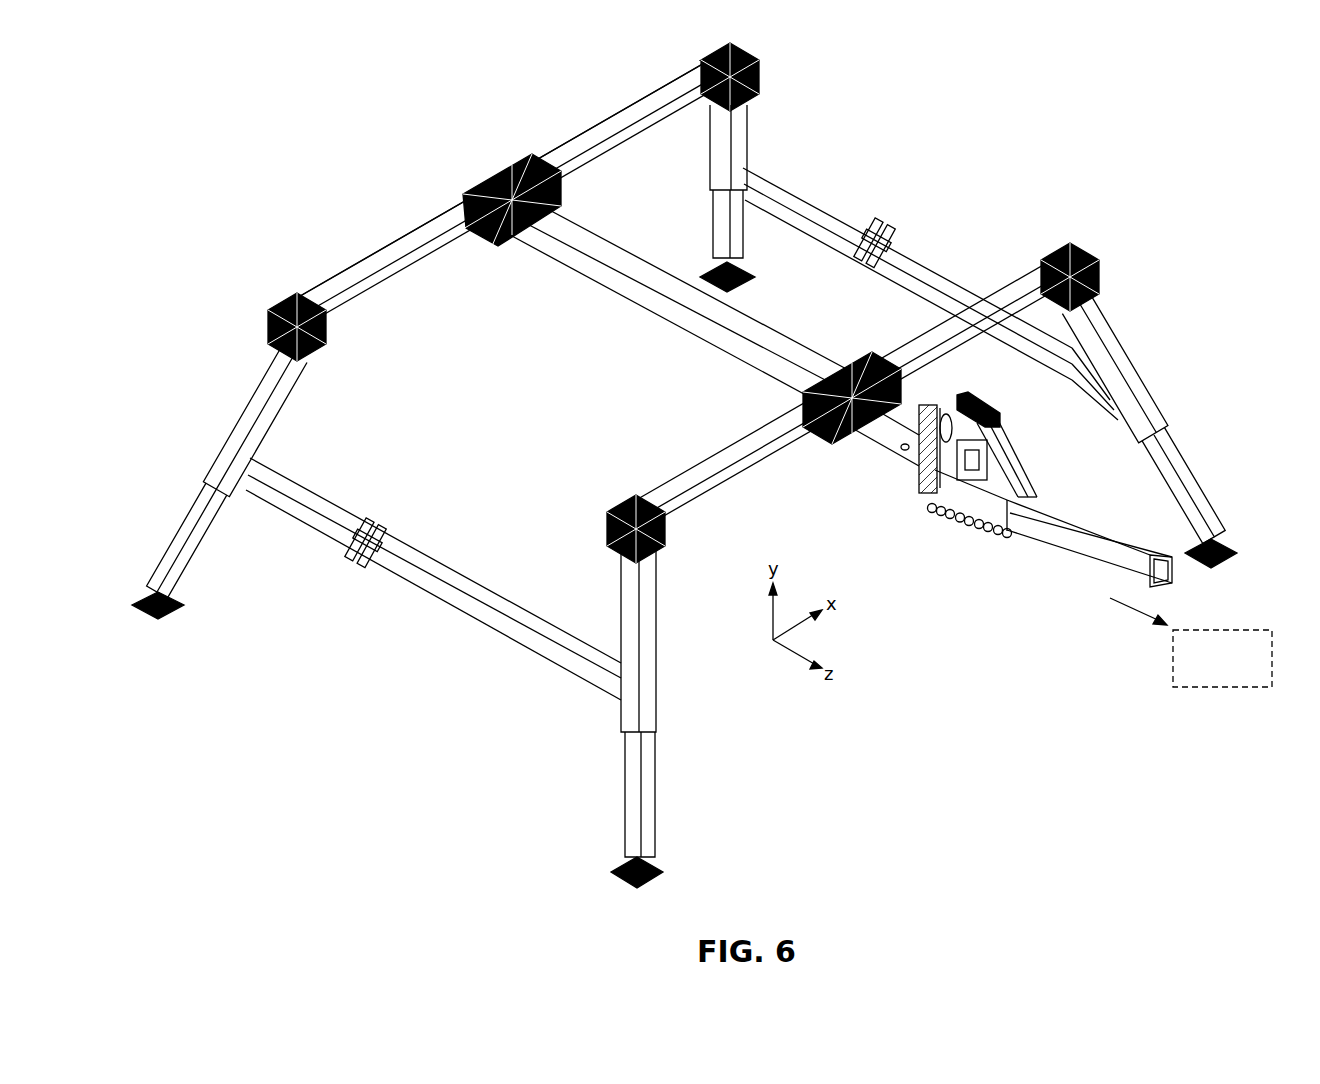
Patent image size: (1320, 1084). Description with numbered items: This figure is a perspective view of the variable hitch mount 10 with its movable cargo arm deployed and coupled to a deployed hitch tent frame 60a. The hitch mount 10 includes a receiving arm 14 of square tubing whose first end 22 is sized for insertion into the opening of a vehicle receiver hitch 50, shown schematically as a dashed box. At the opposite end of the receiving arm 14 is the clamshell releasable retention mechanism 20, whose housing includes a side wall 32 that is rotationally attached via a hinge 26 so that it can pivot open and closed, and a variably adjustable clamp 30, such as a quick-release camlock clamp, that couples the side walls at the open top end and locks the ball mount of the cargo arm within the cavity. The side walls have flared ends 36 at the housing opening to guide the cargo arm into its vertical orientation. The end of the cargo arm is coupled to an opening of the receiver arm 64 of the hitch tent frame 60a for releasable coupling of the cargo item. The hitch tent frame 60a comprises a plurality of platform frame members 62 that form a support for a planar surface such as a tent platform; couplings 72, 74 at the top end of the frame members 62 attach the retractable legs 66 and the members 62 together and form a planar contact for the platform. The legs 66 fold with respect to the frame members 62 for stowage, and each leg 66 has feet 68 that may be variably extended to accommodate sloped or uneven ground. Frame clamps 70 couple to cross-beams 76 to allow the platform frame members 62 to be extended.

The variable hitch mount 10 is at (942, 661).
The receiving arm 14 is at (1090, 563).
The releasable retention mechanism 20 is at (884, 533).
The first end 22 is at (1170, 550).
The hinge 26 is at (1007, 530).
The variably adjustable clamp 30 is at (993, 395).
The side wall 32 is at (977, 508).
The flared ends 36 is at (925, 458).
The vehicle receiver hitch 50 is at (1173, 653).
The hitch tent frame 60a is at (300, 132).
The platform frame members 62 is at (593, 133).
The receiver arm 64 is at (887, 442).
The retractable legs 66 is at (257, 397).
The feet 68 is at (703, 270).
The frame clamps 70 is at (877, 224).
The coupling 72 is at (270, 305).
The coupling 74 is at (493, 180).
The cross-beams 76 is at (783, 190).